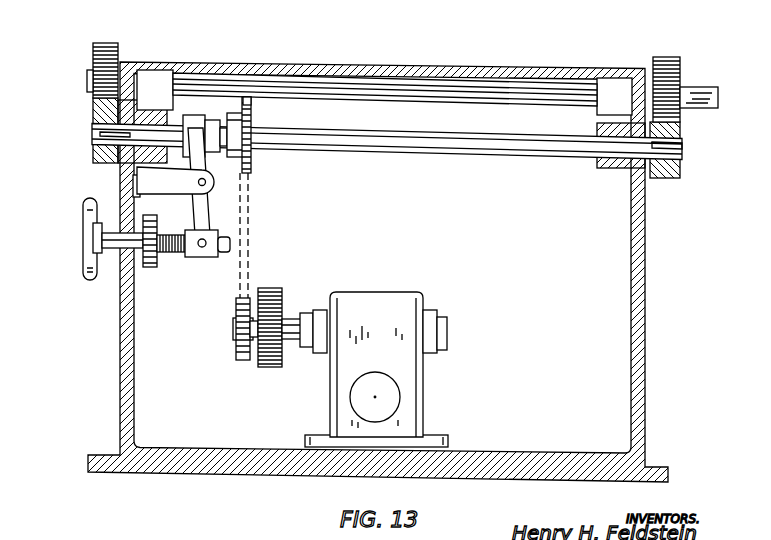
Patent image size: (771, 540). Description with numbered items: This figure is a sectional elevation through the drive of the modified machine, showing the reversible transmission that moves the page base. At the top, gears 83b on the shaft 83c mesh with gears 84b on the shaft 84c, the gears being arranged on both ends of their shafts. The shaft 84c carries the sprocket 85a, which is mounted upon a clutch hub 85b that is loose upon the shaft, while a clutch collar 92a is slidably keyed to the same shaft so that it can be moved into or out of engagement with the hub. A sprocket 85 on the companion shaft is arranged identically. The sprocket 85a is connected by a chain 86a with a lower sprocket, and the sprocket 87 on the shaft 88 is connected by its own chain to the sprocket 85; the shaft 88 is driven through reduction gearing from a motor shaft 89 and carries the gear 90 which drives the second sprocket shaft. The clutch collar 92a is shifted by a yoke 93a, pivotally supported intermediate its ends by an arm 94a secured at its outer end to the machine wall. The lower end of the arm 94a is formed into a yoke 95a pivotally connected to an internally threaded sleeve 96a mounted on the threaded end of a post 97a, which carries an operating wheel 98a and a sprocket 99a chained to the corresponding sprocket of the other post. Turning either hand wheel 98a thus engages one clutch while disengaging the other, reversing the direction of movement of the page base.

The gear 83b is at (92, 60).
The shaft 83c is at (90, 81).
The gear 84b is at (92, 120).
The shaft 84c is at (92, 131).
The clutch collar 92a is at (196, 118).
The clutch hub 85b is at (236, 113).
The sprocket 85a is at (251, 104).
The sprocket 85 is at (251, 152).
The yoke 93a is at (208, 196).
The arm 94a is at (172, 192).
The chain 86a is at (249, 226).
The operating wheel 98a is at (88, 252).
The post 97a is at (115, 246).
The sprocket 99a is at (150, 268).
The yoke 95a is at (198, 257).
The internally threaded sleeve 96a is at (213, 258).
The sprocket 87 is at (237, 346).
The gear 90 is at (278, 290).
The shaft 88 is at (447, 336).
The motor shaft 89 is at (376, 396).